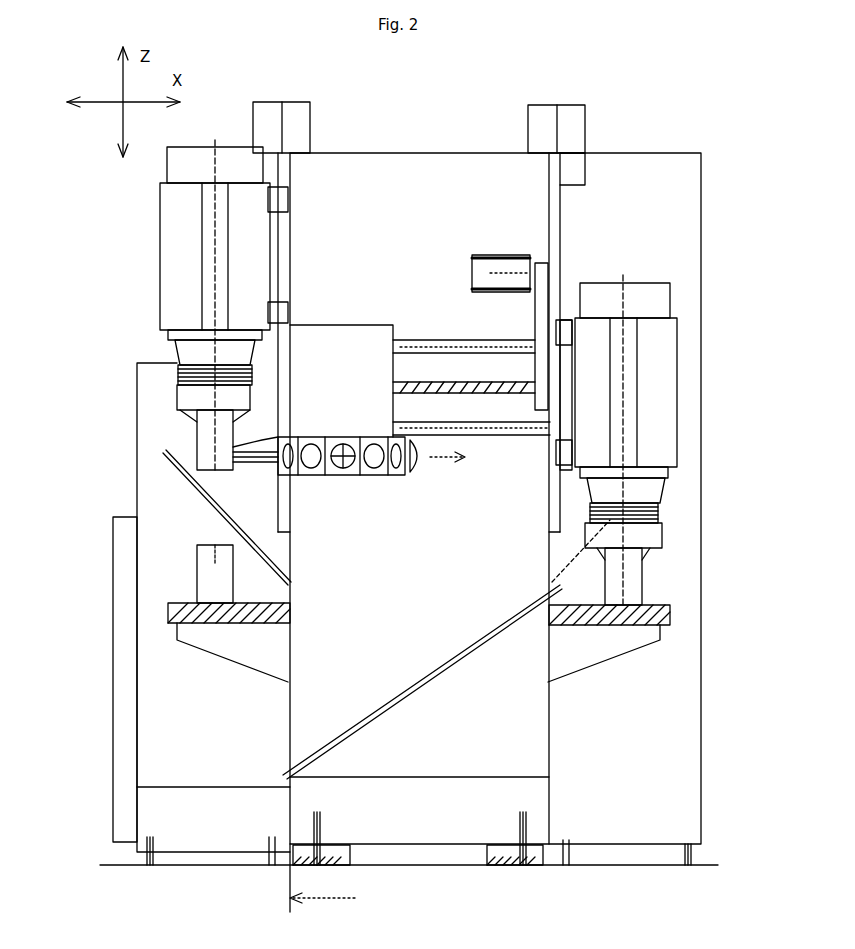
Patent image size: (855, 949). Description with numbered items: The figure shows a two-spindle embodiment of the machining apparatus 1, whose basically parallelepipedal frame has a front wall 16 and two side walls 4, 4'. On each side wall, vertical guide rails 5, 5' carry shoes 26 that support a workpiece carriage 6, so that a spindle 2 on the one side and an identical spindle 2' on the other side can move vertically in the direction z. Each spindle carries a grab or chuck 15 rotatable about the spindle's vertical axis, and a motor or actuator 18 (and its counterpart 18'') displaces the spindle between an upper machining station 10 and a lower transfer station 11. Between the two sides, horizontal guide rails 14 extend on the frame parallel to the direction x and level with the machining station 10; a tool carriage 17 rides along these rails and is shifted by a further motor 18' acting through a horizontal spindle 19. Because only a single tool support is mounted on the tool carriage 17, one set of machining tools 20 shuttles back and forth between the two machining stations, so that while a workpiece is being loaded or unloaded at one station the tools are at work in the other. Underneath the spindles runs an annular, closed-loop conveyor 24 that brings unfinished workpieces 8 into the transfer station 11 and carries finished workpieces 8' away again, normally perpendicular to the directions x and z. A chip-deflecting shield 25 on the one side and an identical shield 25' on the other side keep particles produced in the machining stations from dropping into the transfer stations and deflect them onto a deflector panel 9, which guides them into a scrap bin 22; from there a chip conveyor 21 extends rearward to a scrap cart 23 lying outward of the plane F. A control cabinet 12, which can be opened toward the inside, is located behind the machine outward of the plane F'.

The machining apparatus 1 is at (393, 128).
The spindle 2 is at (193, 305).
The spindle 2' is at (669, 440).
The side wall 4 is at (262, 720).
The side wall 4' is at (584, 728).
The vertical guide rails 5 is at (304, 342).
The vertical guide rails 5' is at (569, 358).
The workpiece carriage 6 is at (137, 290).
The unfinished workpiece 8 is at (182, 440).
The finished workpiece 8' is at (464, 564).
The deflector panel 9 is at (410, 680).
The machining station 10 is at (150, 458).
The transfer station 11 is at (168, 577).
The control cabinet 12 is at (683, 785).
The guide rails 14 is at (465, 337).
The grab or chuck 15 is at (652, 535).
The front wall 16 is at (470, 175).
The tool carriage 17 is at (372, 340).
The motor or actuator 18 is at (299, 113).
The motor 18' is at (501, 257).
The motor or actuator 18'' is at (549, 129).
The spindle 19 is at (465, 380).
The machining tools 20 is at (238, 465).
The chip conveyor 21 is at (170, 708).
The scrap bin 22 is at (155, 800).
The scrap cart 23 is at (125, 757).
The conveyor 24 is at (185, 605).
The chip-deflecting shield 25 is at (307, 561).
The chip-deflecting shield 25' is at (551, 551).
The shoes 26 is at (295, 200).